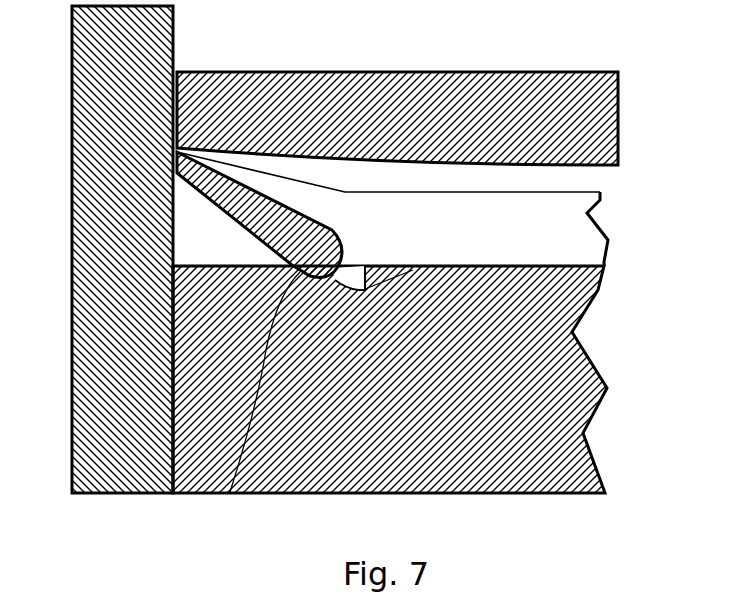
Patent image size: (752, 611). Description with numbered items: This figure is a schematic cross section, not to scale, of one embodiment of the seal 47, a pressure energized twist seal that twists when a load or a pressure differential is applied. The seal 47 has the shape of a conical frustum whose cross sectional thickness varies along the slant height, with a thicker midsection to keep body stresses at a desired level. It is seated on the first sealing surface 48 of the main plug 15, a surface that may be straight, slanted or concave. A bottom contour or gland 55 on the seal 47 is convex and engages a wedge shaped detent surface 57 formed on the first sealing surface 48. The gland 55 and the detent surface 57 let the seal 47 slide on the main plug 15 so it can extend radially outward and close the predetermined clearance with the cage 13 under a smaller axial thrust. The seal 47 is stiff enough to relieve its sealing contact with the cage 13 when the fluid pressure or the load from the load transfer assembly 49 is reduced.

The cage 13 is at (70, 103).
The load transfer assembly 49 is at (530, 72).
The main plug 15 is at (597, 370).
The gland 55 is at (341, 267).
The detent surface 57 is at (418, 267).
The seal 47 is at (610, 238).
The first sealing surface 48 is at (230, 492).